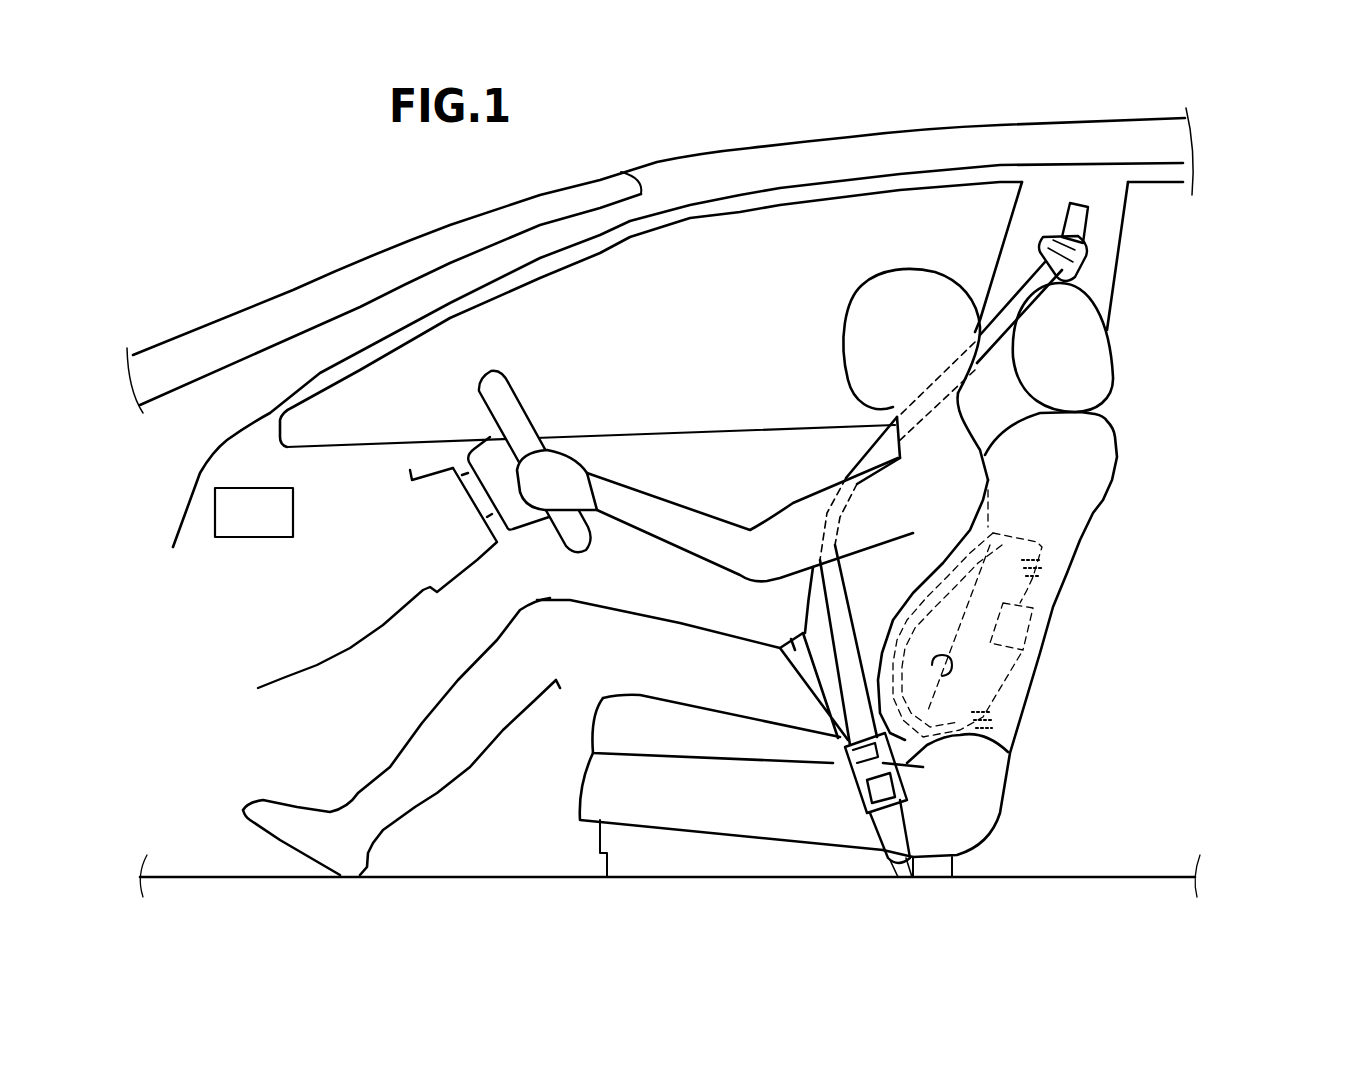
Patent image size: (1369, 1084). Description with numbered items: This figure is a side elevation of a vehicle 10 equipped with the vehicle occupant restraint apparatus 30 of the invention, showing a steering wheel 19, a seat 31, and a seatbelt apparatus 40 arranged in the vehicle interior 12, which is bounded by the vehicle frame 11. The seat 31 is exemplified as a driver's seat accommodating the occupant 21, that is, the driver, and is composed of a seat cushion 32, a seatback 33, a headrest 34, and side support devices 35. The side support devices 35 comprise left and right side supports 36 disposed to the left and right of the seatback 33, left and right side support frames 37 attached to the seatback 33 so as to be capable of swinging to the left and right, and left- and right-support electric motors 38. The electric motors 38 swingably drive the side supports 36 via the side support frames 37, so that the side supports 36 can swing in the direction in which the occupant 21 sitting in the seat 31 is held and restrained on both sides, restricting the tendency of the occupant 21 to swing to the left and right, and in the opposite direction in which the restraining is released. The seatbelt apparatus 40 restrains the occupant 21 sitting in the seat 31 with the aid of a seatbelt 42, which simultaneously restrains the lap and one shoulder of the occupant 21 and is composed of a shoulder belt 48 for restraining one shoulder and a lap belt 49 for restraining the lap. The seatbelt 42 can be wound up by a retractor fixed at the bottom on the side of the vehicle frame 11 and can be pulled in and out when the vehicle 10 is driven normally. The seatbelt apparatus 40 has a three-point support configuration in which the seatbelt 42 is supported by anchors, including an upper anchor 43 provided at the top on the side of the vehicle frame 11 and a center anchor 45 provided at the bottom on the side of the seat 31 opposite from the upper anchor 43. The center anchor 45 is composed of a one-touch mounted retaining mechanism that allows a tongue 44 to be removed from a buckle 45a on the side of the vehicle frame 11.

The vehicle 10 is at (166, 136).
The vehicle frame 11 is at (770, 143).
The vehicle interior 12 is at (654, 284).
The steering wheel 19 is at (503, 397).
The occupant 21 is at (912, 300).
The vehicle occupant restraint apparatus 30 is at (255, 528).
The seat 31 is at (1248, 368).
The seat cushion 32 is at (975, 795).
The seatback 33 is at (942, 680).
The headrest 34 is at (1100, 378).
The side support devices 35 is at (1088, 453).
The side support 36 is at (1003, 485).
The side support frame 37 is at (947, 573).
The side support electric motor 38 is at (1003, 633).
The seatbelt apparatus 40 is at (857, 460).
The seatbelt 42 is at (703, 386).
The upper anchor 43 is at (1082, 213).
The tongue 44 is at (850, 767).
The center anchor 45 is at (893, 840).
The buckle 45a is at (865, 792).
The shoulder belt 48 is at (830, 515).
The lap belt 49 is at (803, 633).